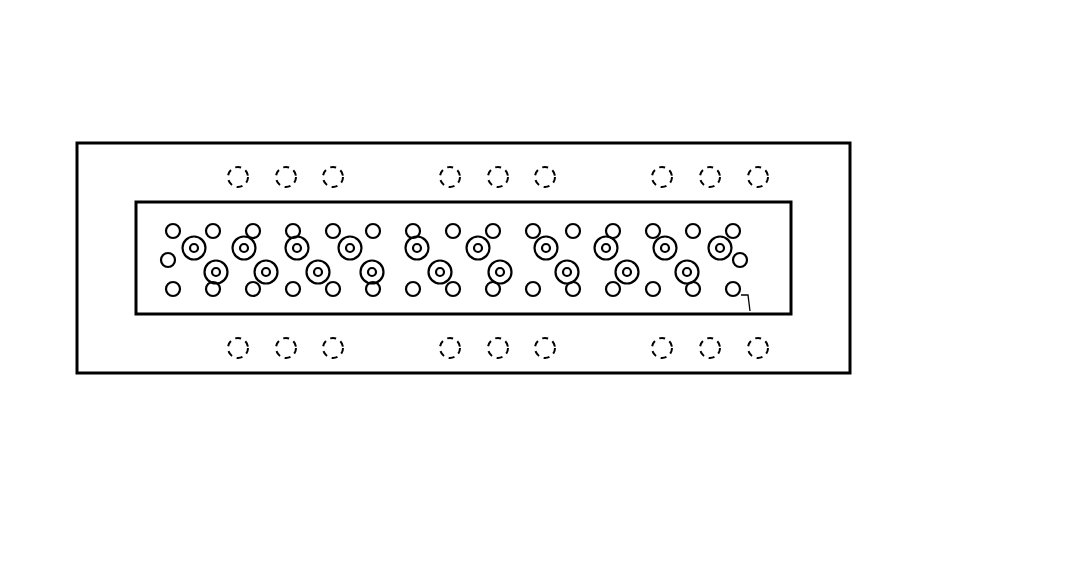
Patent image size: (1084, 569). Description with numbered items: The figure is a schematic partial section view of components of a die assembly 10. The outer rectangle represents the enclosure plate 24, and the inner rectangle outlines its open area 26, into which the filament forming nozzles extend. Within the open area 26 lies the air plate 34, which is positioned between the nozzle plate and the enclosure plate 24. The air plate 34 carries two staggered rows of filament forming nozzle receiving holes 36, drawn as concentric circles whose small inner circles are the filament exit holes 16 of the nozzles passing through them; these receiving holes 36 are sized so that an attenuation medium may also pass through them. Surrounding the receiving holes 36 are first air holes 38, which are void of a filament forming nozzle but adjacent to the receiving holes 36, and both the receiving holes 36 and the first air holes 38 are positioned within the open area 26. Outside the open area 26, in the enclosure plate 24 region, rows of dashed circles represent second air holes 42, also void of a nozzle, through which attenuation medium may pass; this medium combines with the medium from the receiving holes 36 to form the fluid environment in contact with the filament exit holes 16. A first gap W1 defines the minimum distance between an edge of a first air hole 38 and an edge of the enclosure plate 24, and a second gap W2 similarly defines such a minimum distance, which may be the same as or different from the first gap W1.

The die assembly 10 is at (132, 132).
The filament exit holes 16 is at (522, 247).
The enclosure plate 24 is at (786, 357).
The open area 26 is at (720, 218).
The air plate 34 is at (477, 297).
The filament forming nozzle receiving holes 36 is at (606, 236).
The first air holes 38 is at (175, 222).
The second air holes 42 is at (336, 167).
The first gap W1 is at (750, 311).
The second gap W2 is at (250, 223).